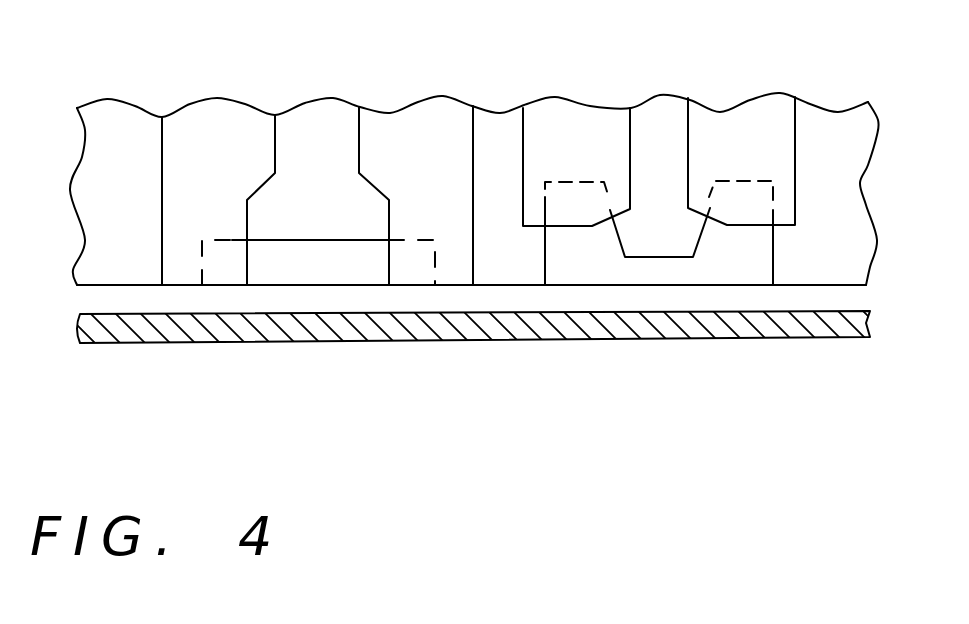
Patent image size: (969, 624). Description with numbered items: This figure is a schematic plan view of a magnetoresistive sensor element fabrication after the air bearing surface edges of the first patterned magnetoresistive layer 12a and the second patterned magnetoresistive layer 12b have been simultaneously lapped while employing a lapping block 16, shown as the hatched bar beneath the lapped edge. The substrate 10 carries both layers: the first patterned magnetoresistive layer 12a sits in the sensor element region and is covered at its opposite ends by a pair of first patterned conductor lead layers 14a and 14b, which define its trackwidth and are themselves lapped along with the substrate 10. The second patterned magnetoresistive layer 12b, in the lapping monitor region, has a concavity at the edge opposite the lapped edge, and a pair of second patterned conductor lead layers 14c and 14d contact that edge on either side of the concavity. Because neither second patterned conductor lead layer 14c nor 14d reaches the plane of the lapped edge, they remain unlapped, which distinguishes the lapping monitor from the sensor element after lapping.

The substrate 10 is at (93, 158).
The first patterned magnetoresistive (MR) layer 12a is at (315, 255).
The second patterned magnetoresistive (MR) layer 12b is at (648, 268).
The first patterned conductor lead layer 14a is at (207, 117).
The first patterned conductor lead layer 14b is at (416, 117).
The second patterned conductor lead layer 14c is at (568, 117).
The second patterned conductor lead layer 14d is at (732, 125).
The lapping block 16 is at (210, 330).